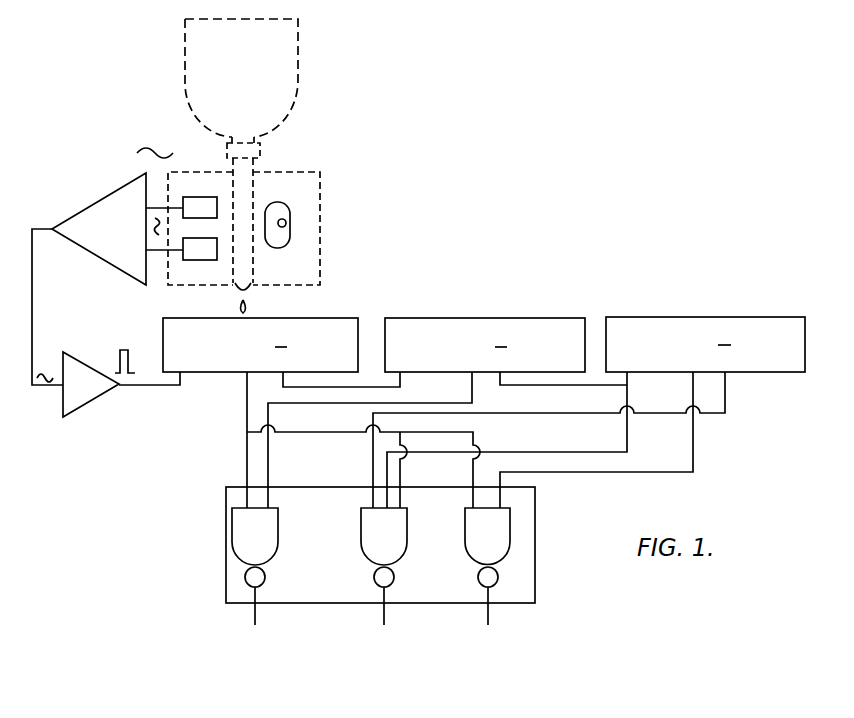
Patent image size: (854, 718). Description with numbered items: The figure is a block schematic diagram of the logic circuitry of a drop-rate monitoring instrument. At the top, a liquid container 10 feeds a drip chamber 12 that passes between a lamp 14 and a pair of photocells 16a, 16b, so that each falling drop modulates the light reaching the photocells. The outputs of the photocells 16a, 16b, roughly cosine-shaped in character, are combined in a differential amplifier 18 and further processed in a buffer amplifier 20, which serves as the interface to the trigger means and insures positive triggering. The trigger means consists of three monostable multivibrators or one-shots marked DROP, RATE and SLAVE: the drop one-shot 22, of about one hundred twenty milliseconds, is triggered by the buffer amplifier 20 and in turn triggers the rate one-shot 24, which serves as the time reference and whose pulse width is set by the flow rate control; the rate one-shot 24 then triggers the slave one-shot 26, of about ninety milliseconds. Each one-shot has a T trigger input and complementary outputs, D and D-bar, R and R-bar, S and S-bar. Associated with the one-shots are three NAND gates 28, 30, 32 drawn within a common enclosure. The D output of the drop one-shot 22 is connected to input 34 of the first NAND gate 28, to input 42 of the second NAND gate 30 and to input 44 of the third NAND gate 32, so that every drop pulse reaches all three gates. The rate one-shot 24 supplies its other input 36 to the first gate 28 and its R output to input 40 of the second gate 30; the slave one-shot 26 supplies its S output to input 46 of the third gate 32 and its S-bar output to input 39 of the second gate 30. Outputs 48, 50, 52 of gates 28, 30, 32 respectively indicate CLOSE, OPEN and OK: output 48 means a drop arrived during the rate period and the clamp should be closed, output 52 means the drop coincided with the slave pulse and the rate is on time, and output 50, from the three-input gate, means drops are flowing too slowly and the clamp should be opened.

The liquid container 10 is at (298, 80).
The drip chamber 12 is at (255, 165).
The lamp 14 is at (290, 223).
The photocell 16a is at (188, 197).
The photocell 16b is at (198, 260).
The differential amplifier 18 is at (108, 192).
The buffer amplifier 20 is at (73, 355).
The drop one-shot 22 is at (332, 317).
The rate one-shot 24 is at (462, 318).
The slave one-shot 26 is at (678, 317).
The first NAND gate 28 is at (231, 582).
The second NAND gate 30 is at (364, 582).
The third NAND gate 32 is at (503, 582).
The input of first NAND gate 34 is at (245, 465).
The input of first NAND gate 36 is at (270, 447).
The input of second NAND gate 39 is at (372, 448).
The input of second NAND gate 40 is at (388, 465).
The input of second NAND gate 42 is at (402, 495).
The input of third NAND gate 44 is at (473, 477).
The input of third NAND gate 46 is at (537, 480).
The output of first NAND gate 48 is at (257, 598).
The output of second NAND gate 50 is at (385, 596).
The output of third NAND gate 52 is at (490, 590).